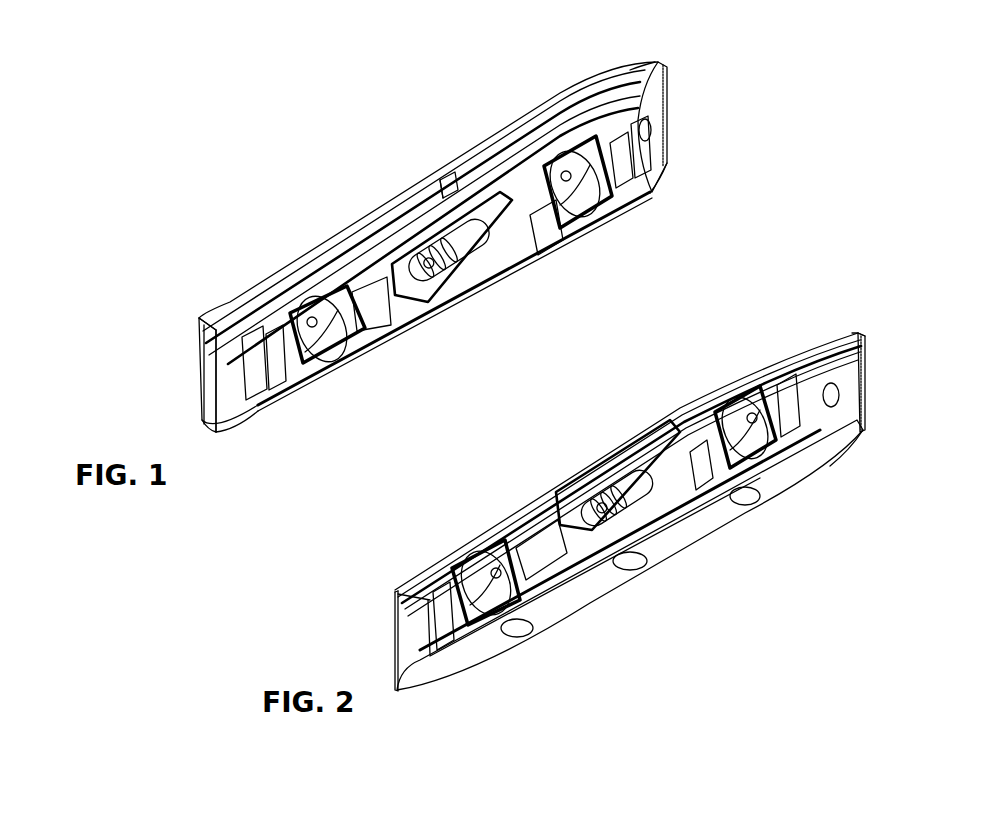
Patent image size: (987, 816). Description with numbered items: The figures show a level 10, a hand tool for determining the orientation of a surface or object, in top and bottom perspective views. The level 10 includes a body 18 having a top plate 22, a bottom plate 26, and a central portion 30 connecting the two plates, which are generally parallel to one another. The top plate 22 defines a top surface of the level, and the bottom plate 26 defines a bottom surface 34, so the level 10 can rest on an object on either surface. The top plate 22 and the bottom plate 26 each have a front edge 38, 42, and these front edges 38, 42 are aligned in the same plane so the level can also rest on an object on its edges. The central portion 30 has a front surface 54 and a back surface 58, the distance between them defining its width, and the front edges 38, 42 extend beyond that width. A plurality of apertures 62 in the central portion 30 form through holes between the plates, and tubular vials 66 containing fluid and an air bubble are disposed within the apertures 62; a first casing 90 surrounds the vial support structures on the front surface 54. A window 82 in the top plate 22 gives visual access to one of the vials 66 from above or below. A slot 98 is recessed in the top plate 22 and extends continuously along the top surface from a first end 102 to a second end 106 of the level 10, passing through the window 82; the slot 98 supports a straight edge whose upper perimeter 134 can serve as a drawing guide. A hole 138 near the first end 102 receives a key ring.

In FIG. 1, the level 10 is at (247, 180).
In FIG. 2, the level 10 is at (890, 308).
In FIG. 1, the body 18 is at (218, 372).
In FIG. 2, the body 18 is at (846, 442).
In FIG. 1, the top plate 22 is at (262, 278).
In FIG. 2, the top plate 22 is at (818, 342).
In FIG. 1, the bottom plate 26 is at (250, 405).
In FIG. 2, the bottom plate 26 is at (547, 614).
In FIG. 1, the central portion 30 is at (500, 152).
In FIG. 2, the central portion 30 is at (631, 474).
In FIG. 2, the bottom surface 34 is at (659, 554).
In FIG. 1, the front edge 38 is at (587, 138).
In FIG. 2, the front edge 38 is at (630, 440).
In FIG. 1, the front edge 42 is at (408, 332).
In FIG. 2, the front edge 42 is at (672, 532).
In FIG. 1, the front surface 54 is at (660, 110).
In FIG. 2, the front surface 54 is at (412, 627).
In FIG. 1, the back surface 58 is at (196, 403).
In FIG. 2, the back surface 58 is at (869, 385).
In FIG. 1, the apertures 62 is at (587, 191).
In FIG. 2, the apertures 62 is at (732, 448).
In FIG. 1, the tubular vials 66 is at (413, 262).
In FIG. 2, the tubular vials 66 is at (737, 412).
In FIG. 1, the window 82 is at (433, 192).
In FIG. 1, the first casing 90 is at (623, 166).
In FIG. 2, the first casing 90 is at (785, 392).
In FIG. 1, the slot 98 is at (660, 62).
In FIG. 2, the slot 98 is at (859, 332).
In FIG. 1, the first end 102 is at (199, 304).
In FIG. 2, the first end 102 is at (380, 585).
In FIG. 1, the second end 106 is at (673, 183).
In FIG. 2, the second end 106 is at (844, 475).
In FIG. 2, the upper perimeter 134 is at (830, 392).
In FIG. 1, the hole 138 is at (650, 133).